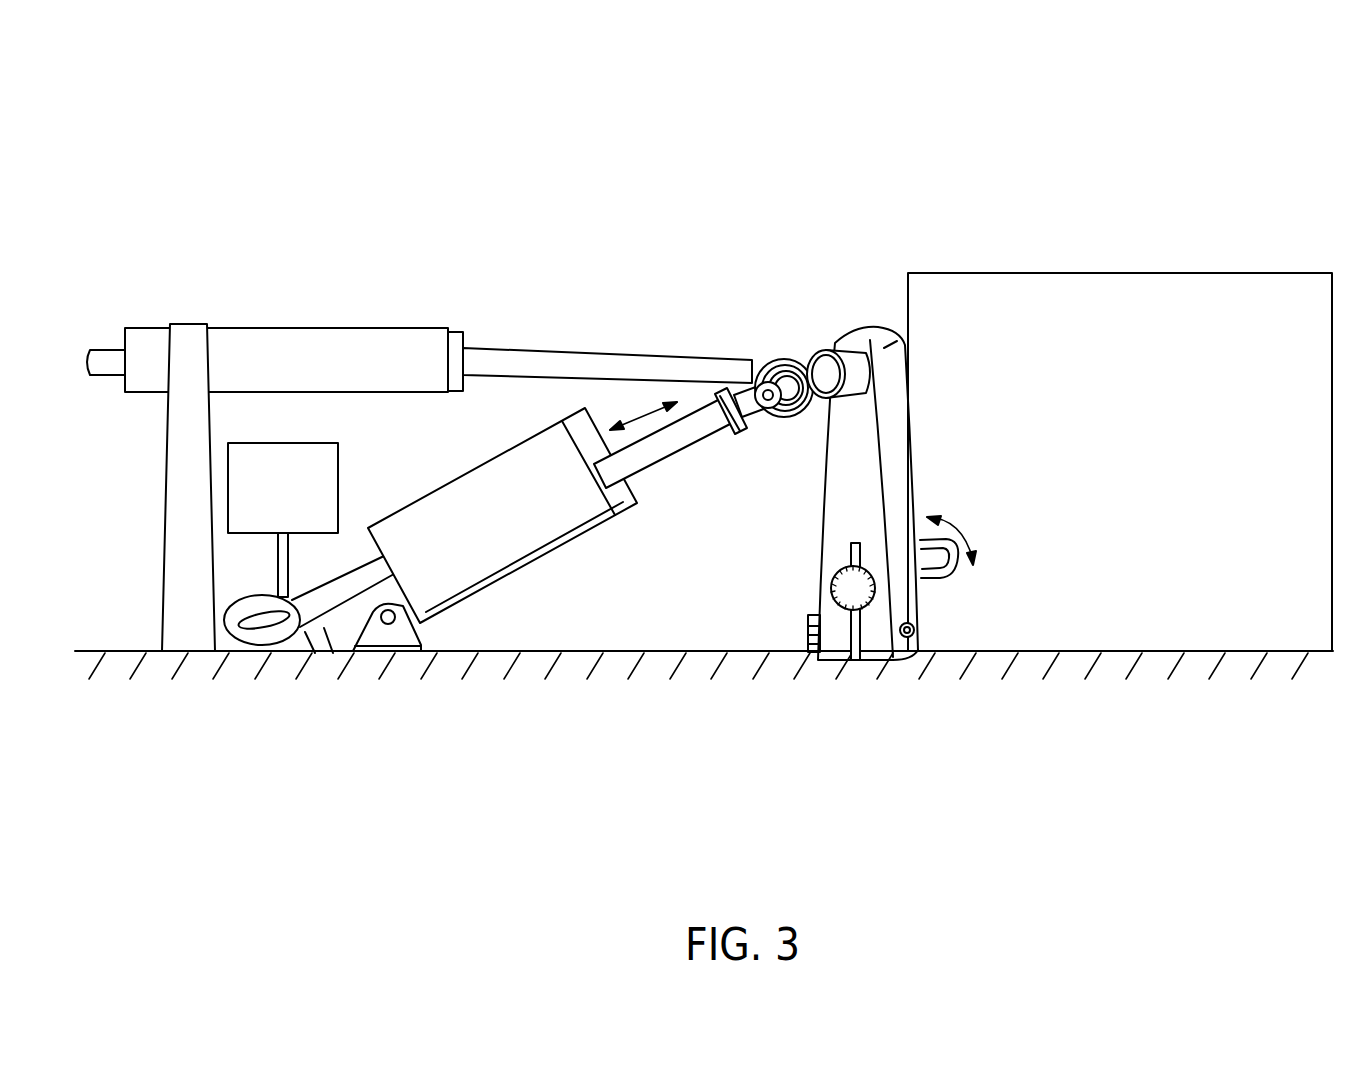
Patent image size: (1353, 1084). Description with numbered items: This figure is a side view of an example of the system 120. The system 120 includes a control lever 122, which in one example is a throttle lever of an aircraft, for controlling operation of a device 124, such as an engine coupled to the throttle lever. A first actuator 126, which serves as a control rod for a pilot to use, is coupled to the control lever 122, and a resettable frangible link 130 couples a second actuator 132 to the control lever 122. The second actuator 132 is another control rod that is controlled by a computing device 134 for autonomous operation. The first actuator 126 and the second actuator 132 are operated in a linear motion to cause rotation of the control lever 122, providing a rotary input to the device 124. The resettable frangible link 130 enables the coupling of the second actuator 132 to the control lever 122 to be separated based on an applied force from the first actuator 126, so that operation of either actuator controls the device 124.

The system 120 is at (340, 118).
The control lever 122 is at (817, 519).
The device 124 is at (1084, 262).
The first actuator 126 is at (277, 315).
The resettable frangible link 130 is at (740, 364).
The second actuator 132 is at (480, 490).
The computing device 134 is at (339, 473).